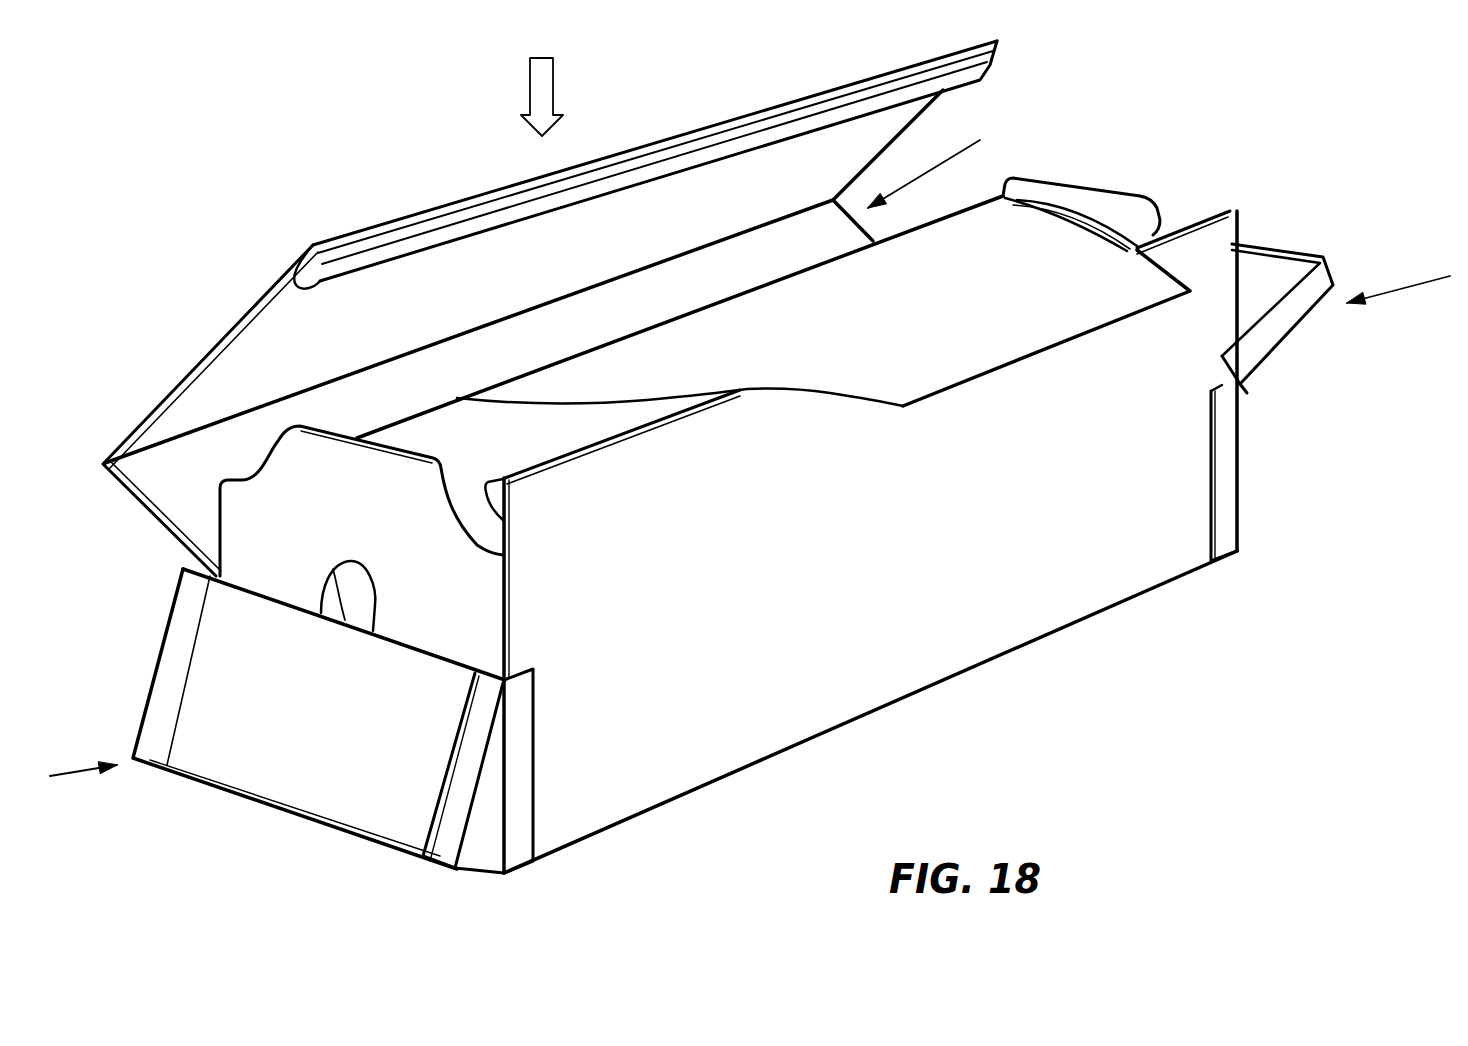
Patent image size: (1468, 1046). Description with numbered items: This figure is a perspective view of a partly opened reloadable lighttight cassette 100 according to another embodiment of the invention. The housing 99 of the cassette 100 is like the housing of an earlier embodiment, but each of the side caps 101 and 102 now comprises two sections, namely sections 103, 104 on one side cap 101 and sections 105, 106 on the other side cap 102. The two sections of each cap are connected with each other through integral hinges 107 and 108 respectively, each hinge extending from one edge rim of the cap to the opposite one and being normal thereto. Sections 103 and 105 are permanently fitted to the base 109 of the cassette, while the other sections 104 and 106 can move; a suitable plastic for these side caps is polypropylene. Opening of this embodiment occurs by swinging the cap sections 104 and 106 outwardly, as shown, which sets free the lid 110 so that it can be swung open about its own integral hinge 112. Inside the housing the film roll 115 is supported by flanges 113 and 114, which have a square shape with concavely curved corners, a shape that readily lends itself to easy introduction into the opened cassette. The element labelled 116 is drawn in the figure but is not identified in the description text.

The housing 99 is at (938, 160).
The cassette 100 is at (555, 87).
The side cap 101 is at (88, 776).
The side cap 102 is at (1398, 269).
The cap section 103 is at (517, 863).
The cap section 104 is at (440, 855).
The cap section 105 is at (1222, 495).
The cap section 106 is at (1277, 329).
The integral hinge 107 is at (443, 654).
The integral hinge 108 is at (1243, 393).
The base 109 is at (985, 640).
The lid 110 is at (215, 365).
The integral hinge 112 is at (188, 566).
The flange 113 is at (232, 518).
The flange 114 is at (1133, 215).
The film roll 115 is at (420, 443).
The roll core end 116 is at (352, 565).